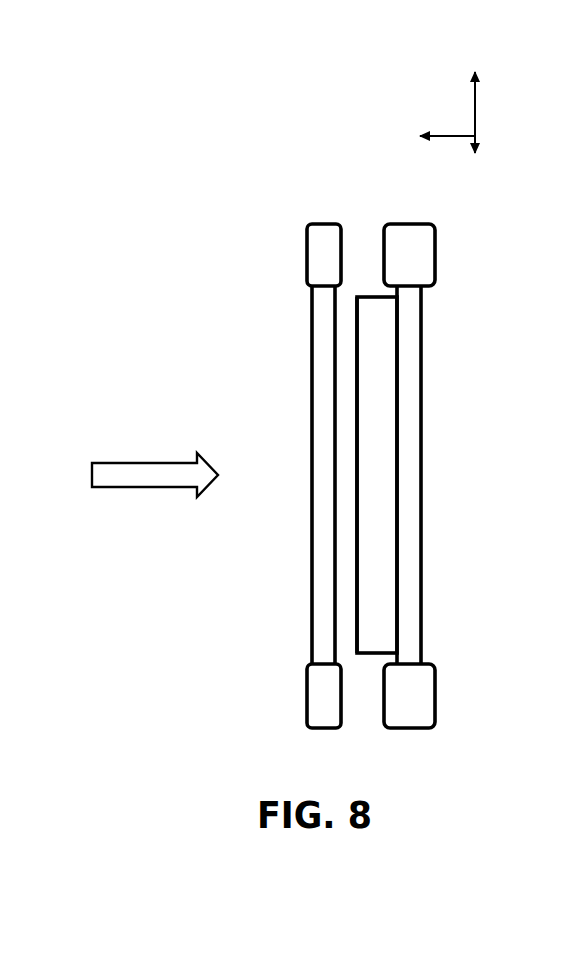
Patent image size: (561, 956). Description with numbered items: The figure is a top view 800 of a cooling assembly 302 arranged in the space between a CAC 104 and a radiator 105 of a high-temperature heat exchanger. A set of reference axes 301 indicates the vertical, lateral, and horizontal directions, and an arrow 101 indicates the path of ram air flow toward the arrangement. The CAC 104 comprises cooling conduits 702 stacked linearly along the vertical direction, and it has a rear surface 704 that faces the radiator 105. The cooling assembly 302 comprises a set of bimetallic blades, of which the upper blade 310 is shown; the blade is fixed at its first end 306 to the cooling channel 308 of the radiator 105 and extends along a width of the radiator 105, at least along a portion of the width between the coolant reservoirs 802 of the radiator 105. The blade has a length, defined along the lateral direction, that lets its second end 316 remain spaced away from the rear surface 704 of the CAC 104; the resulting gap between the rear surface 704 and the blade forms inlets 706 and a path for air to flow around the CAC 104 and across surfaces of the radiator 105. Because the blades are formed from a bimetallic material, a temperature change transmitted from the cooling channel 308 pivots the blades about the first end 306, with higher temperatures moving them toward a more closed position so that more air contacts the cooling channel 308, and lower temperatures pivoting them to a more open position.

The top view 800 is at (228, 116).
The reference axes 301 is at (430, 86).
The arrow 101 is at (147, 488).
The CAC 104 is at (243, 240).
The radiator 105 is at (470, 222).
The cooling assembly 302 is at (368, 186).
The first end 306 is at (397, 298).
The cooling channel 308 is at (422, 488).
The upper blade 310 is at (392, 470).
The second end 316 is at (356, 337).
The cooling conduits 702 is at (313, 408).
The rear surface 704 is at (336, 586).
The inlets 706 is at (373, 229).
The coolant reservoirs 802 is at (437, 258).